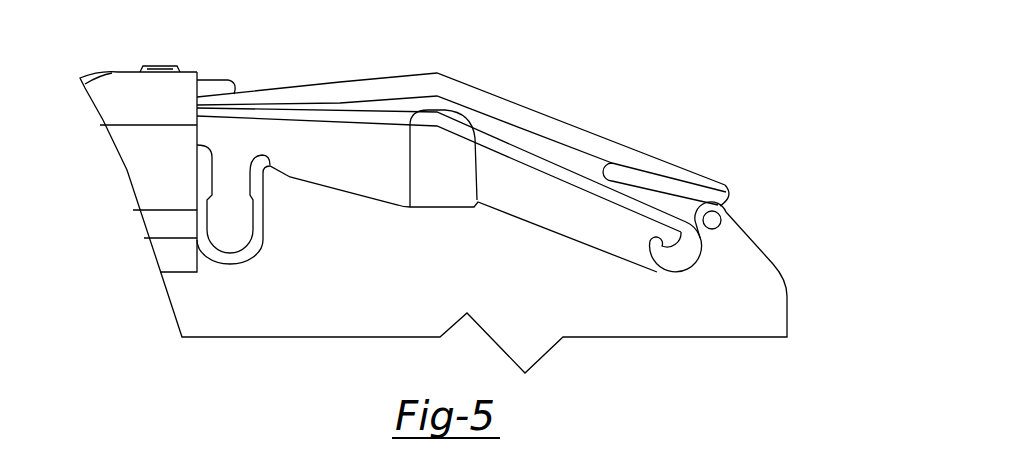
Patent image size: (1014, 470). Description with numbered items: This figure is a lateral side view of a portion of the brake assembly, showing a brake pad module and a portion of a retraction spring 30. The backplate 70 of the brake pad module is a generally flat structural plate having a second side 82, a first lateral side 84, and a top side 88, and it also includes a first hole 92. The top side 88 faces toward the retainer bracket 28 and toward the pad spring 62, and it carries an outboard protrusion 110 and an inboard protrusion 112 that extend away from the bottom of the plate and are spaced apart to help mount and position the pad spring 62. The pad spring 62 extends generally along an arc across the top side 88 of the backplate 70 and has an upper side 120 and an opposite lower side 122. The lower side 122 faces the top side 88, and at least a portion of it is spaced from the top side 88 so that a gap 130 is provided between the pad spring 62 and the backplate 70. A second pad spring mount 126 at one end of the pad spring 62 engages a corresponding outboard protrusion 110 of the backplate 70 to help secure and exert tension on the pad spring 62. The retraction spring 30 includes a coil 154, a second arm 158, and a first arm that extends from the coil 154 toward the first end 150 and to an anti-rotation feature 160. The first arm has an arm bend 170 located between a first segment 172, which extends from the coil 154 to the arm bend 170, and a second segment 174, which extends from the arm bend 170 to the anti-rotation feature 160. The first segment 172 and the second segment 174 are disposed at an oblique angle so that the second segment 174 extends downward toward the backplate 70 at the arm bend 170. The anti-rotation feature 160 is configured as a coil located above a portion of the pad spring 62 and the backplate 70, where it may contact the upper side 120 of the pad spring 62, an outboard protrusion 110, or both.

The retainer bracket 28 is at (122, 70).
The coil 154 is at (230, 82).
The first segment 172 is at (482, 102).
The arm bend 170 is at (482, 102).
The retraction spring 30 is at (482, 168).
The upper side 120 is at (449, 187).
The second segment 174 is at (618, 158).
The anti-rotation feature 160 is at (360, 80).
The first hole 92 is at (781, 219).
The first end 150 is at (737, 240).
The first lateral side 84 is at (787, 313).
The outboard protrusion 110 is at (753, 297).
The second pad spring mount 126 is at (678, 252).
The lower side 122 is at (449, 187).
The top side 88 is at (449, 187).
The gap 130 is at (508, 205).
The second arm 158 is at (503, 140).
The inboard protrusion 112 is at (458, 182).
The pad spring 62 is at (352, 126).
The backplate 70 is at (433, 222).
The second side 82 is at (420, 289).